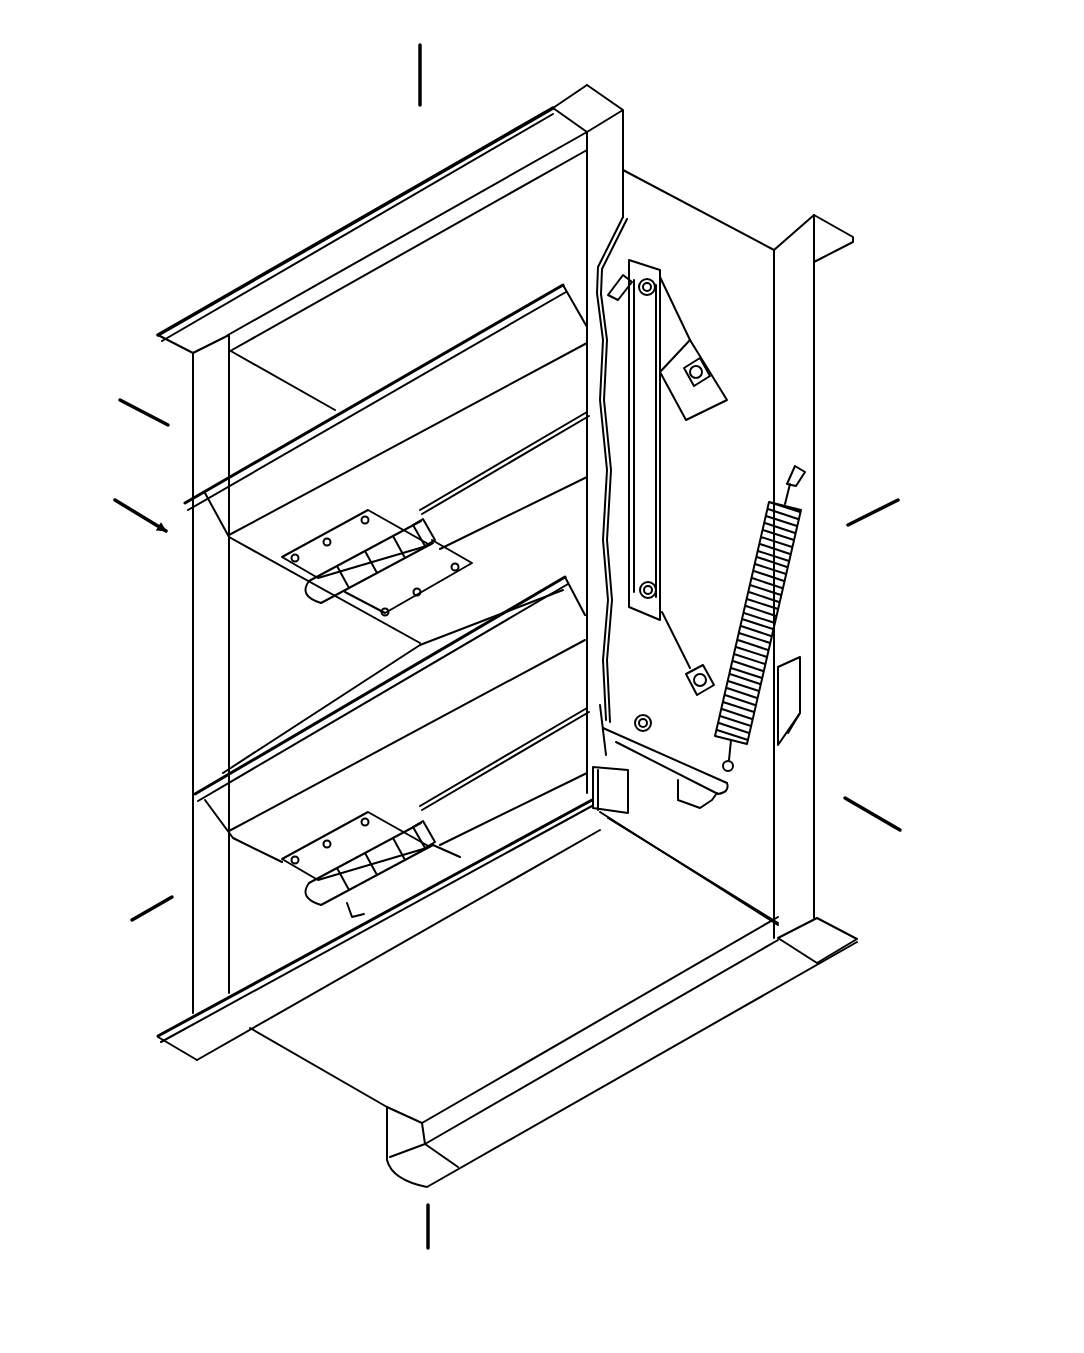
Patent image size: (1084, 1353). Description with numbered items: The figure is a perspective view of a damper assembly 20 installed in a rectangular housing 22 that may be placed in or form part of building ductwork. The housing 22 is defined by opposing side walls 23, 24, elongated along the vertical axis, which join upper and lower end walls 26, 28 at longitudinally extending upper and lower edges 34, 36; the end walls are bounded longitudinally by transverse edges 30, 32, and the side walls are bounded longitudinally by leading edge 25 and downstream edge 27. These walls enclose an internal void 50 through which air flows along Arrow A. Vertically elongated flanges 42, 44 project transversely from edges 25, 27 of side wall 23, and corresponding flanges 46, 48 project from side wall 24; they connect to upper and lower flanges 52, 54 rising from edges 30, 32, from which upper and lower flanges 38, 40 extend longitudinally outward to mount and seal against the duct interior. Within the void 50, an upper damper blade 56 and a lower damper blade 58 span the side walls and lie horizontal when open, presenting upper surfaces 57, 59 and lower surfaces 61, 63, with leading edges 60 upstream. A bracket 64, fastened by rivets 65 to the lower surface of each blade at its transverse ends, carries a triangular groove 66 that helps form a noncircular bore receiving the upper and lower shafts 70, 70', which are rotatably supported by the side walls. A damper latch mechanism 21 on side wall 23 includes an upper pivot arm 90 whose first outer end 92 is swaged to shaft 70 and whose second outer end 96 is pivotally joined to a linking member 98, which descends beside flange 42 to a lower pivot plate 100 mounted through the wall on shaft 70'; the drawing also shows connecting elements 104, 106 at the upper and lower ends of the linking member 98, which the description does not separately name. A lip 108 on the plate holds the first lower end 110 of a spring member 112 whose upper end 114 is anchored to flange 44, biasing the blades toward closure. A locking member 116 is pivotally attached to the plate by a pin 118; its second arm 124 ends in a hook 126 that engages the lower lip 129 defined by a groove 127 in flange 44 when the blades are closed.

The damper assembly 20 is at (630, 34).
The damper latch mechanism 21 is at (674, 283).
The housing 22 is at (672, 185).
The side wall 23 is at (711, 476).
The side wall 24 is at (281, 655).
The edge 25 is at (587, 195).
The end wall 26 is at (423, 322).
The edge 27 is at (773, 325).
The end wall 28 is at (546, 944).
The edge 30 is at (470, 214).
The edge 32 is at (706, 960).
The upper edge 34 is at (266, 371).
The lower edge 36 is at (705, 878).
The upper flange 38 is at (407, 190).
The lower flange 40 is at (424, 916).
The flange 42 is at (625, 130).
The flange 44 is at (815, 472).
The flange 46 is at (193, 680).
The flange 48 is at (420, 655).
The internal void 50 is at (252, 601).
The upper flange 52 is at (330, 292).
The lower flange 54 is at (570, 1046).
The upper damper blade 56 is at (318, 422).
The upper surface 57 is at (236, 470).
The lower damper blade 58 is at (380, 706).
The upper surface 59 is at (360, 705).
The leading edge 60 is at (404, 380).
The lower surface 61 is at (228, 512).
The lower surface 63 is at (225, 818).
The bracket 64 is at (384, 522).
The rivets 65 is at (325, 538).
The triangular groove 66 is at (414, 548).
The upper noncircular shaft 70 is at (571, 585).
The lower noncircular shaft 70' is at (698, 650).
The upper pivot arm 90 is at (688, 316).
The first outer end 92 is at (705, 410).
The second outer end 96 is at (613, 275).
The linking member 98 is at (661, 470).
The lower pivot plate 100 is at (618, 666).
The upper bolt 104 is at (655, 275).
The lower bolt 106 is at (657, 582).
The lip 108 is at (731, 786).
The first lower end 110 is at (735, 768).
The spring member 112 is at (801, 555).
The upper end 114 is at (788, 470).
The locking member 116 is at (607, 790).
The pin 118 is at (648, 716).
The second arm 124 is at (660, 776).
The hook 126 is at (692, 808).
The groove 127 is at (803, 708).
The lower lip 129 is at (803, 720).